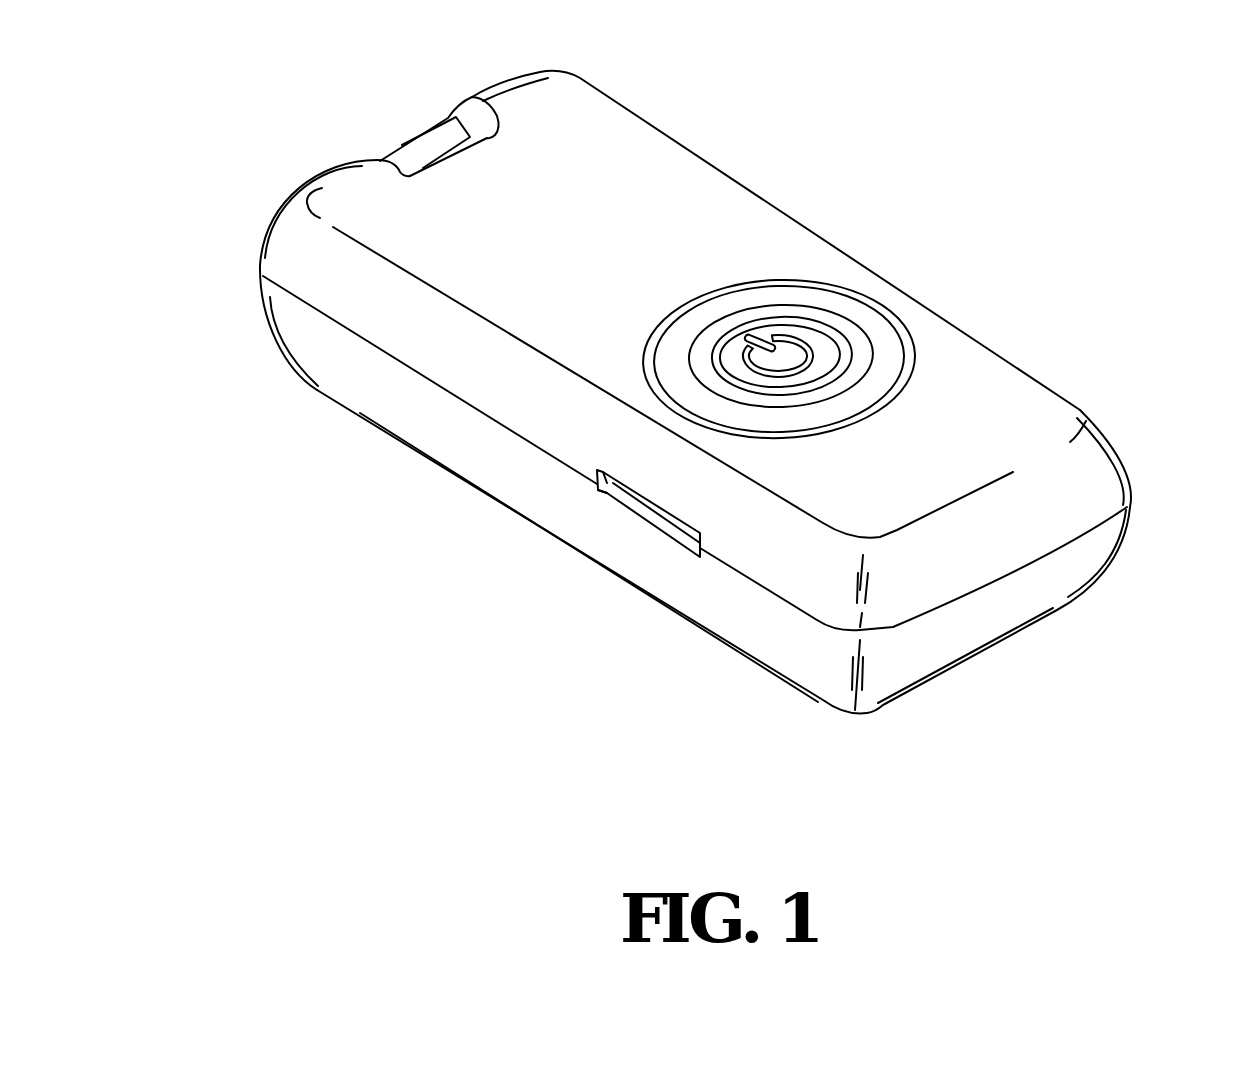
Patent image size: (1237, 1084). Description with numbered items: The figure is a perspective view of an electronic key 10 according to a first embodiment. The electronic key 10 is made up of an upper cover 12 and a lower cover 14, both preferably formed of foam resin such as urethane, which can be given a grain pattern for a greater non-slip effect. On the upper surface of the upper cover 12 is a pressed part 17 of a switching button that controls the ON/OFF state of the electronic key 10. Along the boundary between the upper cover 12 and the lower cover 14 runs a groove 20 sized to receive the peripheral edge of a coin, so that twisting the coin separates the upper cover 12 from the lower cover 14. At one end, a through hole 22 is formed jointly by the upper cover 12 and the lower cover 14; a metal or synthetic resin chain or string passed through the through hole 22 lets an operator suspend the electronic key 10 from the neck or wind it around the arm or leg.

The electronic key 10 is at (858, 258).
The upper cover 12 is at (1097, 465).
The lower cover 14 is at (675, 577).
The pressed part 17 is at (748, 297).
The groove 20 is at (617, 505).
The through hole 22 is at (423, 167).